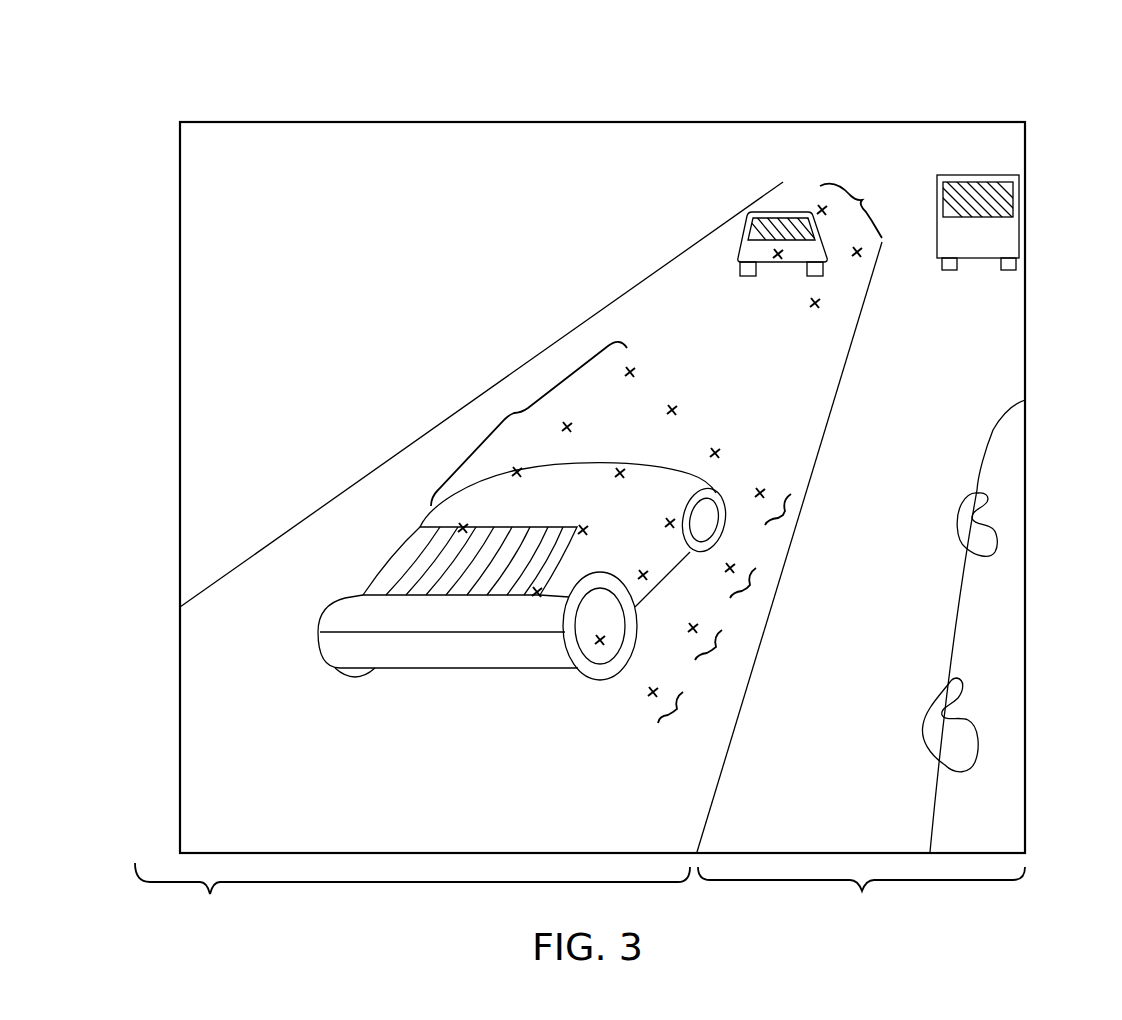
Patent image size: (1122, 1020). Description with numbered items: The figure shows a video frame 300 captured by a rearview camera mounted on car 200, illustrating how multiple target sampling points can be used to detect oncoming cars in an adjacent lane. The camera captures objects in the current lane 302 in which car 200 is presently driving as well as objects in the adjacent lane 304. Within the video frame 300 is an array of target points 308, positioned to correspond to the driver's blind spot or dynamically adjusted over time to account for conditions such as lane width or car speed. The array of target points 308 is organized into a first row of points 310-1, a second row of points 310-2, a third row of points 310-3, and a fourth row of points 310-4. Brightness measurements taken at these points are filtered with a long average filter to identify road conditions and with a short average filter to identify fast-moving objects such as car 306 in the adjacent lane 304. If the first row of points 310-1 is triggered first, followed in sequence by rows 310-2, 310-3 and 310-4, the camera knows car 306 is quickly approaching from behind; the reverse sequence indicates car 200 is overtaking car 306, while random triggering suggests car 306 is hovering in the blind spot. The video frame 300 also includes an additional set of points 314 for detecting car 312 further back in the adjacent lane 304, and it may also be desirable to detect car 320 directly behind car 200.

The video frame 300 is at (984, 88).
The car 200 is at (1007, 617).
The current lane 302 is at (861, 896).
The adjacent lane 304 is at (412, 894).
The car 306 is at (298, 662).
The array of target points 308 is at (510, 405).
The first row of points 310-1 is at (783, 515).
The second row of points 310-2 is at (747, 588).
The third row of points 310-3 is at (712, 650).
The fourth row of points 310-4 is at (673, 712).
The car 312 is at (747, 255).
The additional set of points 314 is at (855, 205).
The car 320 is at (1003, 195).